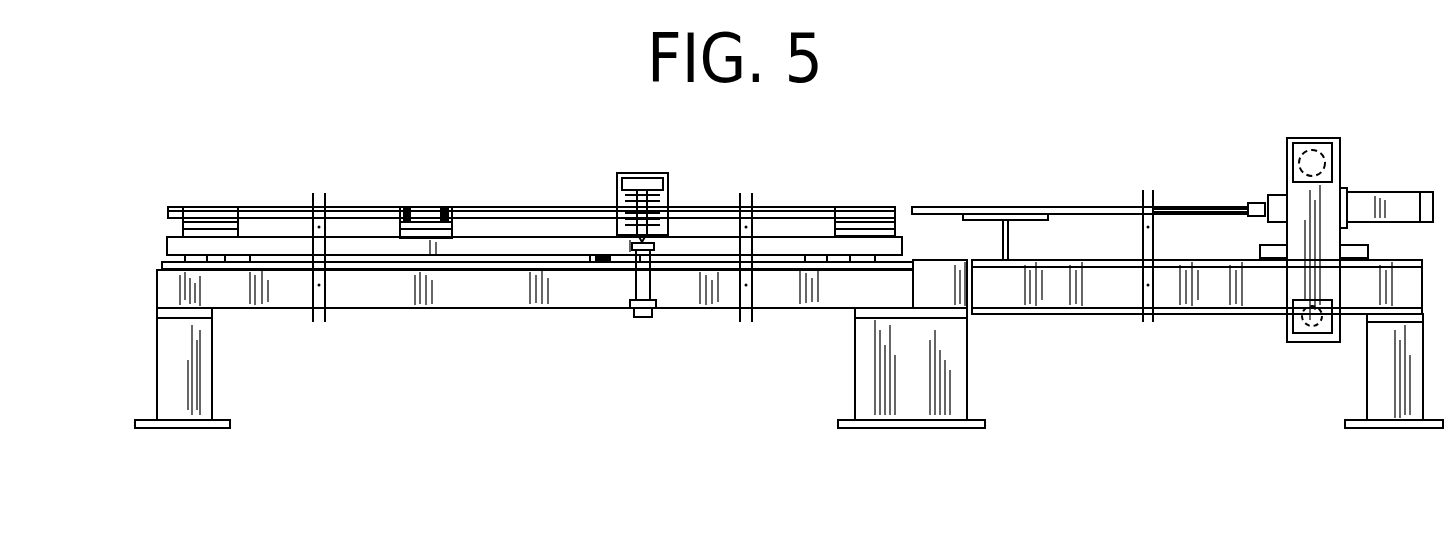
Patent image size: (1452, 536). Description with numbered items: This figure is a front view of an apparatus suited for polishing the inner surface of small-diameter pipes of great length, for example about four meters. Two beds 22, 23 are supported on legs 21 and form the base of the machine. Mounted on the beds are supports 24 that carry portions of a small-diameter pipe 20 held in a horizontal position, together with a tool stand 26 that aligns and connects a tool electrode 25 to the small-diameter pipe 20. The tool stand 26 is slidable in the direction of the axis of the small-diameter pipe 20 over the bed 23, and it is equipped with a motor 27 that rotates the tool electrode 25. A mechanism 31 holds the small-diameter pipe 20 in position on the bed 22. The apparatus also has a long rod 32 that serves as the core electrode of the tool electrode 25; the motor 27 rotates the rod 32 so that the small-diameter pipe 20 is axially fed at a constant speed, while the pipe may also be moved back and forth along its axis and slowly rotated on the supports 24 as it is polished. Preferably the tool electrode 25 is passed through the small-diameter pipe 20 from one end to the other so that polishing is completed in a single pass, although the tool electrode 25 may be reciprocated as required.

The small-diameter pipe 20 is at (497, 208).
The legs 21 is at (205, 372).
The bed 22 is at (587, 300).
The bed 23 is at (1125, 312).
The supports 24 is at (211, 218).
The tool electrode 25 is at (1088, 205).
The tool stand 26 is at (1287, 160).
The motor 27 is at (1386, 195).
The mechanism that holds the small-diameter pipe in position 31 is at (637, 173).
The rod 32 is at (1180, 205).